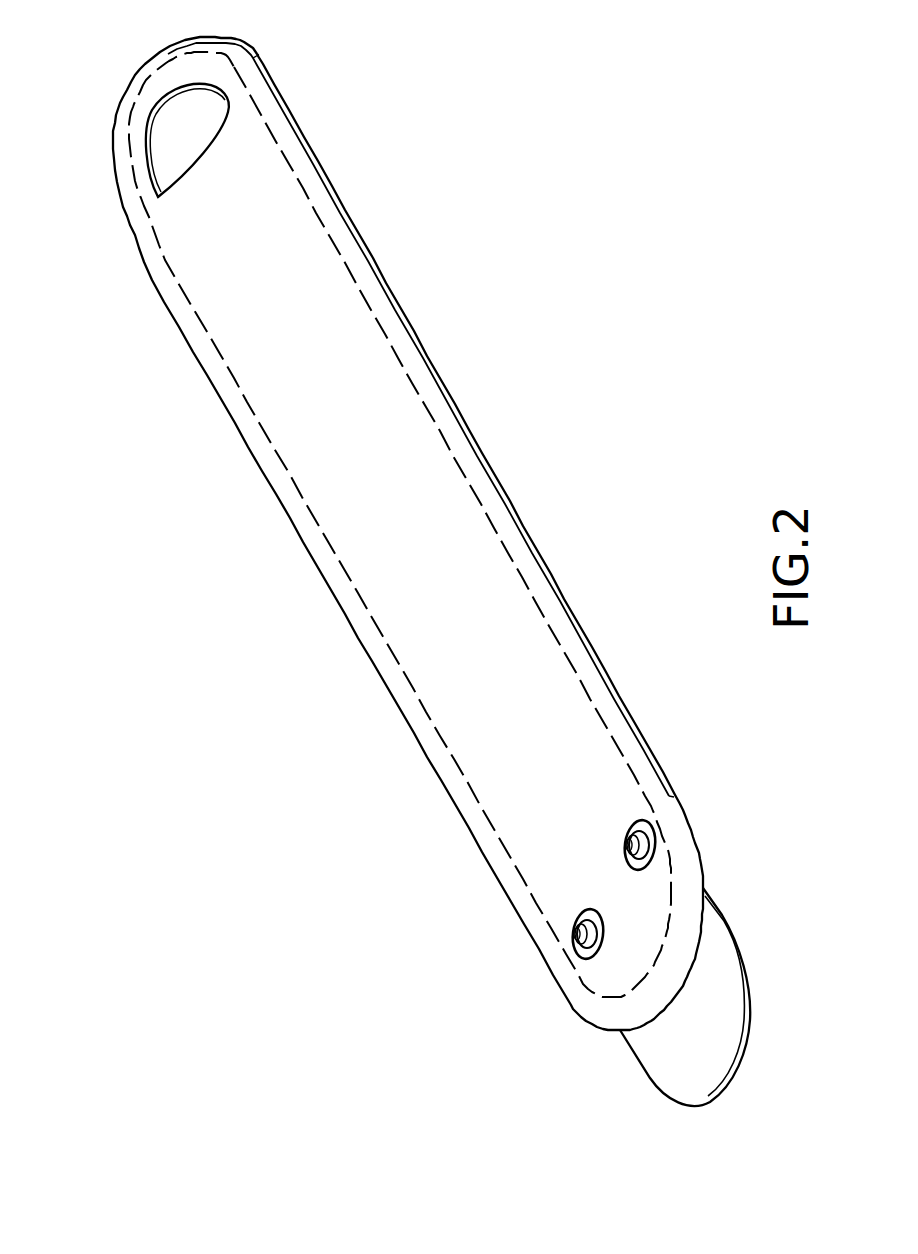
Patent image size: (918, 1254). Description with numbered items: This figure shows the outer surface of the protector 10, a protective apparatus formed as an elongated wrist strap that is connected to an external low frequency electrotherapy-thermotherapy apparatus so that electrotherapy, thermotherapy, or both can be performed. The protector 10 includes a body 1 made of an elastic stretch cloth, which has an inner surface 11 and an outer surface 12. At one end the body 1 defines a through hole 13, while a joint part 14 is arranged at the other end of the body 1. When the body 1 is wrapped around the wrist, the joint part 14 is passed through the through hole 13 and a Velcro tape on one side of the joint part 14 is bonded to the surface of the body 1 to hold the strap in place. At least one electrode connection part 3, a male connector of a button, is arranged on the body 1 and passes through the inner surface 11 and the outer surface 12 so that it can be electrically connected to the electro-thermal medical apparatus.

The body 1 is at (224, 425).
The electrode connection part 3 is at (572, 933).
The protector 10 is at (284, 813).
The inner surface 11 is at (180, 302).
The outer surface 12 is at (325, 553).
The through hole 13 is at (187, 127).
The joint part 14 is at (665, 1072).